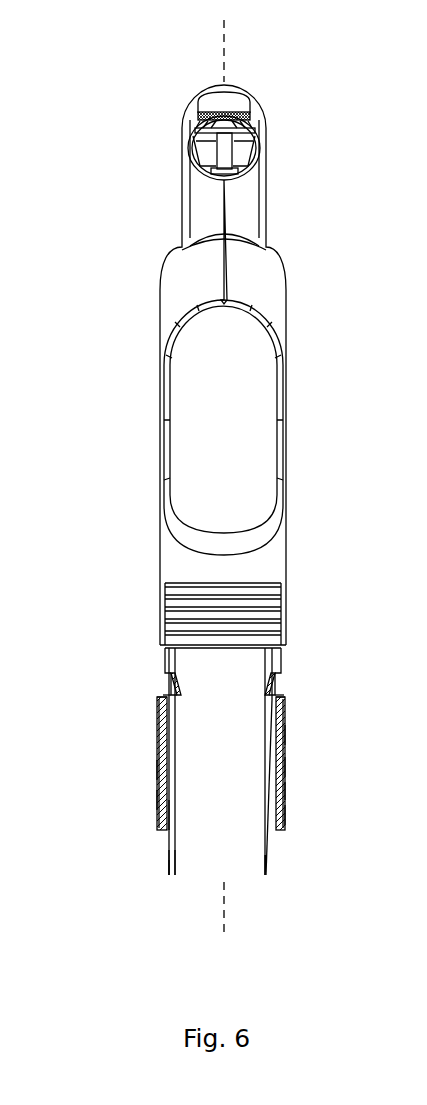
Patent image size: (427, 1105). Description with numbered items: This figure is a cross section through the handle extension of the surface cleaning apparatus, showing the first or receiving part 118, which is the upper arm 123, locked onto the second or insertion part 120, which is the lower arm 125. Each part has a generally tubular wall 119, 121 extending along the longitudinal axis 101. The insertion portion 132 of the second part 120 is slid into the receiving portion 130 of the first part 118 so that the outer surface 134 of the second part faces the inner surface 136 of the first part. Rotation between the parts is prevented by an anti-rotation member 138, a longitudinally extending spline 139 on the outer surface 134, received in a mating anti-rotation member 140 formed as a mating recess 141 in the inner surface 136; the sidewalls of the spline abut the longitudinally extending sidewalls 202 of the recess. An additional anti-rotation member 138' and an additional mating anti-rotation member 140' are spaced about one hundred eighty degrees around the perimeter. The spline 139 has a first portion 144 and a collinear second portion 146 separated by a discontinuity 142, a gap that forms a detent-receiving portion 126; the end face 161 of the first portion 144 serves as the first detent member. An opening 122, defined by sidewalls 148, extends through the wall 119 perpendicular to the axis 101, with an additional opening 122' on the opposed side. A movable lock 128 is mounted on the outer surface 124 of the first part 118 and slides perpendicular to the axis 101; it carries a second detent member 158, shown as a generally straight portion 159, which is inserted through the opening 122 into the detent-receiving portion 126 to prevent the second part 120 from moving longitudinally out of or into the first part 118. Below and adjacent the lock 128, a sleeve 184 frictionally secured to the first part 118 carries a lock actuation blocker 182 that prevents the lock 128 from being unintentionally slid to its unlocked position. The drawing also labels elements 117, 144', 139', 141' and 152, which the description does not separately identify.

The longitudinal axis 101 is at (222, 938).
The cap 117 is at (258, 103).
The thread 144' is at (163, 592).
The first portion 144 is at (280, 614).
The outer surface 124 is at (164, 647).
The wall 119 is at (165, 665).
The additional opening 122' is at (111, 674).
The first part 118 is at (336, 657).
The upper arm 123 is at (283, 655).
The sidewalls 148 is at (279, 677).
The opening 122 is at (343, 691).
The end face 161 is at (223, 660).
The hub top surface 152 is at (223, 660).
The discontinuity 142 is at (265, 694).
The detent-receiving portion 126 is at (176, 694).
The movable lock 128 is at (158, 700).
The insertion portion 132 is at (180, 760).
The inner surface 136 is at (265, 813).
The longitudinally extending sidewalls 202 is at (174, 806).
The wall 121 is at (175, 862).
The receiving portion 130 is at (159, 833).
The additional anti-rotation member 138' is at (97, 768).
The sleeve outer surface 139' is at (97, 768).
The additional mating anti-rotation member 140' is at (97, 798).
The sleeve wall surface 141' is at (97, 798).
The outer surface 134 is at (168, 866).
The lock actuation blocker 182 is at (287, 828).
The second detent member 158 is at (330, 714).
The generally straight portion 159 is at (284, 698).
The mating anti-rotation member 140 is at (339, 741).
The mating recess 141 is at (339, 741).
The anti-rotation member 138 is at (340, 769).
The spline 139 is at (340, 769).
The second portion 146 is at (284, 790).
The sleeve 184 is at (283, 812).
The second part 120 is at (329, 871).
The lower arm 125 is at (272, 866).